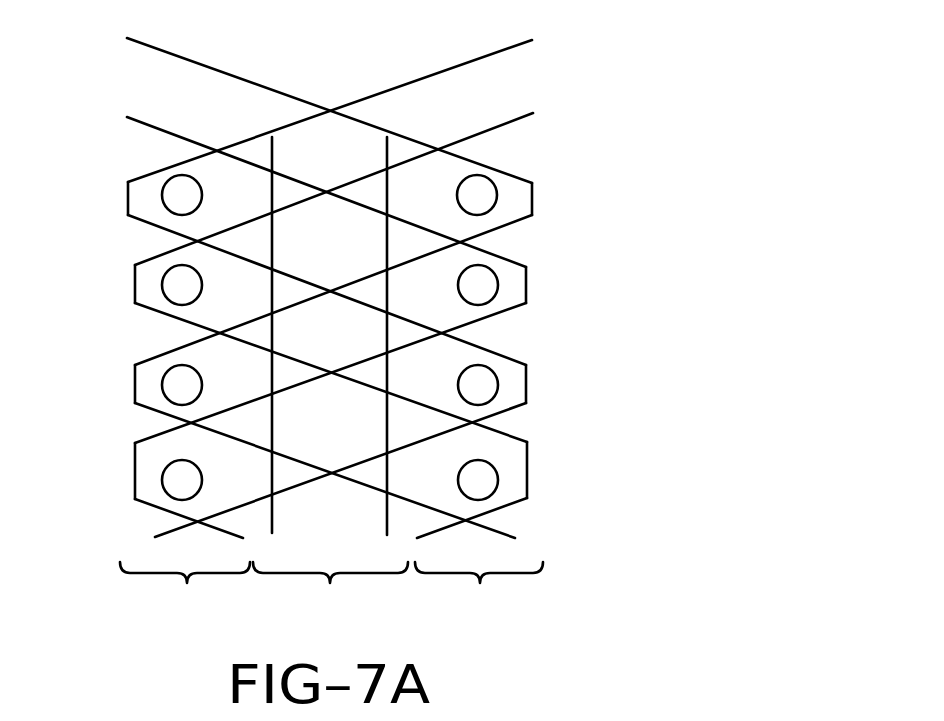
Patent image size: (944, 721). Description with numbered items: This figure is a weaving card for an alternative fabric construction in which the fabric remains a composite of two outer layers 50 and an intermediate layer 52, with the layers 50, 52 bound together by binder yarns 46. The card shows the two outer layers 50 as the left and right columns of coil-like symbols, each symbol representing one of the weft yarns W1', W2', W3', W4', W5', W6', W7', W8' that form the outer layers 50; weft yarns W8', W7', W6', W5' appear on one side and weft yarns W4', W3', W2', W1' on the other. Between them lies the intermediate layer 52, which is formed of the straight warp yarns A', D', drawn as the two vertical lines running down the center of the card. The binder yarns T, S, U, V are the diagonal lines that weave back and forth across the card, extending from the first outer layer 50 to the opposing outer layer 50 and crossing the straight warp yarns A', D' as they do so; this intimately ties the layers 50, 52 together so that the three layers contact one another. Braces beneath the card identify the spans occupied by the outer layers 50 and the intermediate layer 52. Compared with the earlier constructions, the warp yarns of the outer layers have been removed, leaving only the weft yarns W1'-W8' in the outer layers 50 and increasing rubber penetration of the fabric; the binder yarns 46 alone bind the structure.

The binder yarns 46 is at (380, 128).
The outer layers 50 is at (331, 590).
The intermediate layer 52 is at (330, 590).
The weft yarn W1' is at (540, 471).
The weft yarn W2' is at (540, 385).
The weft yarn W3' is at (540, 285).
The weft yarn W4' is at (539, 195).
The weft yarn W5' is at (124, 471).
The weft yarn W6' is at (123, 385).
The weft yarn W7' is at (123, 285).
The weft yarn W8' is at (123, 195).
The binder yarn V is at (316, 102).
The binder yarn U is at (343, 100).
The binder yarn T is at (313, 183).
The binder yarn S is at (388, 370).
The straight warp yarn D' is at (278, 351).
The straight warp yarn A' is at (392, 351).